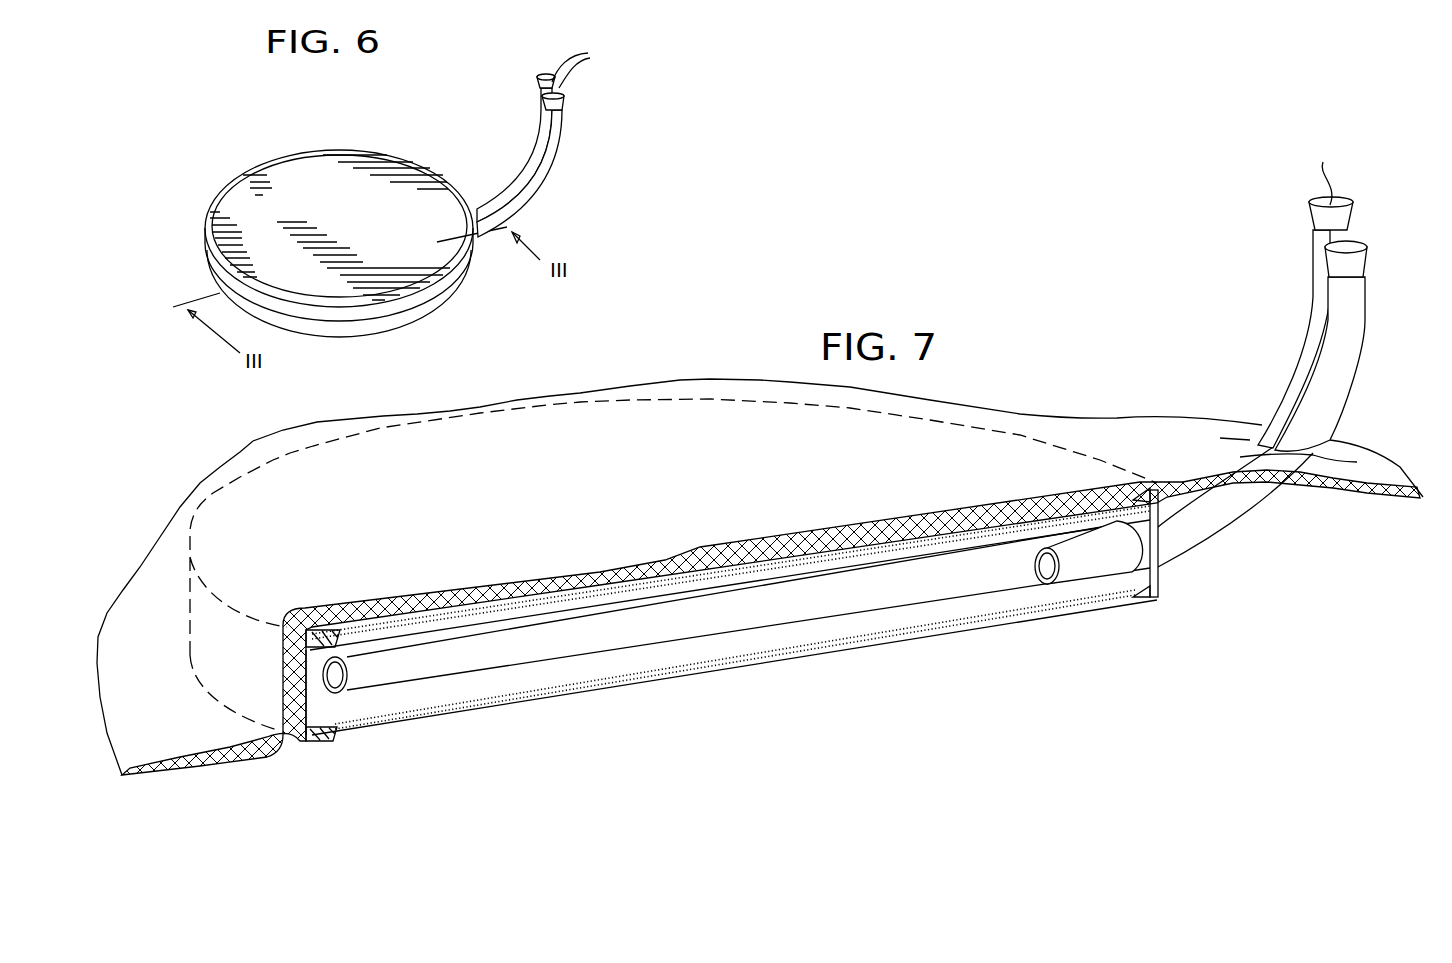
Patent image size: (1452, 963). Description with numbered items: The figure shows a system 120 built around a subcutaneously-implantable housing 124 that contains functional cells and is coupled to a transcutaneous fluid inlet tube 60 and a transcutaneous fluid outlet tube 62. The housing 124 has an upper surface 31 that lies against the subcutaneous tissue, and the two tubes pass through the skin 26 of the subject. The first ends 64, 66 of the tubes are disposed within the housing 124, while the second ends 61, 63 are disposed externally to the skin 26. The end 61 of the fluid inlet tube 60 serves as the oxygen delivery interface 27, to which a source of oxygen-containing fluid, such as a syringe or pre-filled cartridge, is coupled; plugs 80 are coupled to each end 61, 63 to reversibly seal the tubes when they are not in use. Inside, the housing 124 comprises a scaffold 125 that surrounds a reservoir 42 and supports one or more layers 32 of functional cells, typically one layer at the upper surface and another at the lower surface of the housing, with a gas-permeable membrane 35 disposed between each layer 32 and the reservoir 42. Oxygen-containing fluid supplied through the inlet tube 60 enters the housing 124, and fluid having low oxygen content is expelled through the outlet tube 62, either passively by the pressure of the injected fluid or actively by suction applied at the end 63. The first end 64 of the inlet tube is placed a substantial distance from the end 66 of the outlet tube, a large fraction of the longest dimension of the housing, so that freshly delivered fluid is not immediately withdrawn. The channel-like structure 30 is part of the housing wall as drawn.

In FIG. 7, the system 120 is at (663, 340).
In FIG. 6, the subcutaneously-implantable housing 124 is at (270, 143).
In FIG. 7, the subcutaneously-implantable housing 124 is at (213, 479).
In FIG. 7, the skin 26 is at (1140, 417).
In FIG. 6, the oxygen delivery interface 27 is at (543, 131).
In FIG. 7, the oxygen delivery interface 27 is at (1325, 293).
In FIG. 7, the channel housing 30 is at (380, 605).
In FIG. 6, the upper surface 31 is at (313, 210).
In FIG. 7, the layer of functional cells 32 is at (510, 590).
In FIG. 7, the gas-permeable membrane 35 is at (797, 563).
In FIG. 7, the reservoir 42 is at (784, 648).
In FIG. 6, the transcutaneous fluid inlet tube 60 is at (532, 153).
In FIG. 7, the transcutaneous fluid inlet tube 60 is at (1310, 333).
In FIG. 6, the second end of fluid inlet tube 61 is at (540, 90).
In FIG. 7, the second end of fluid inlet tube 61 is at (1347, 230).
In FIG. 6, the transcutaneous fluid outlet tube 62 is at (552, 168).
In FIG. 7, the transcutaneous fluid outlet tube 62 is at (1343, 343).
In FIG. 6, the second end of fluid outlet tube 63 is at (563, 110).
In FIG. 7, the second end of fluid outlet tube 63 is at (1367, 271).
In FIG. 7, the first end of fluid inlet tube 64 is at (333, 697).
In FIG. 7, the first end of fluid outlet tube 66 is at (1050, 585).
In FIG. 6, the plug 80 is at (584, 64).
In FIG. 7, the plug 80 is at (1329, 170).
In FIG. 7, the scaffold 125 is at (1160, 575).